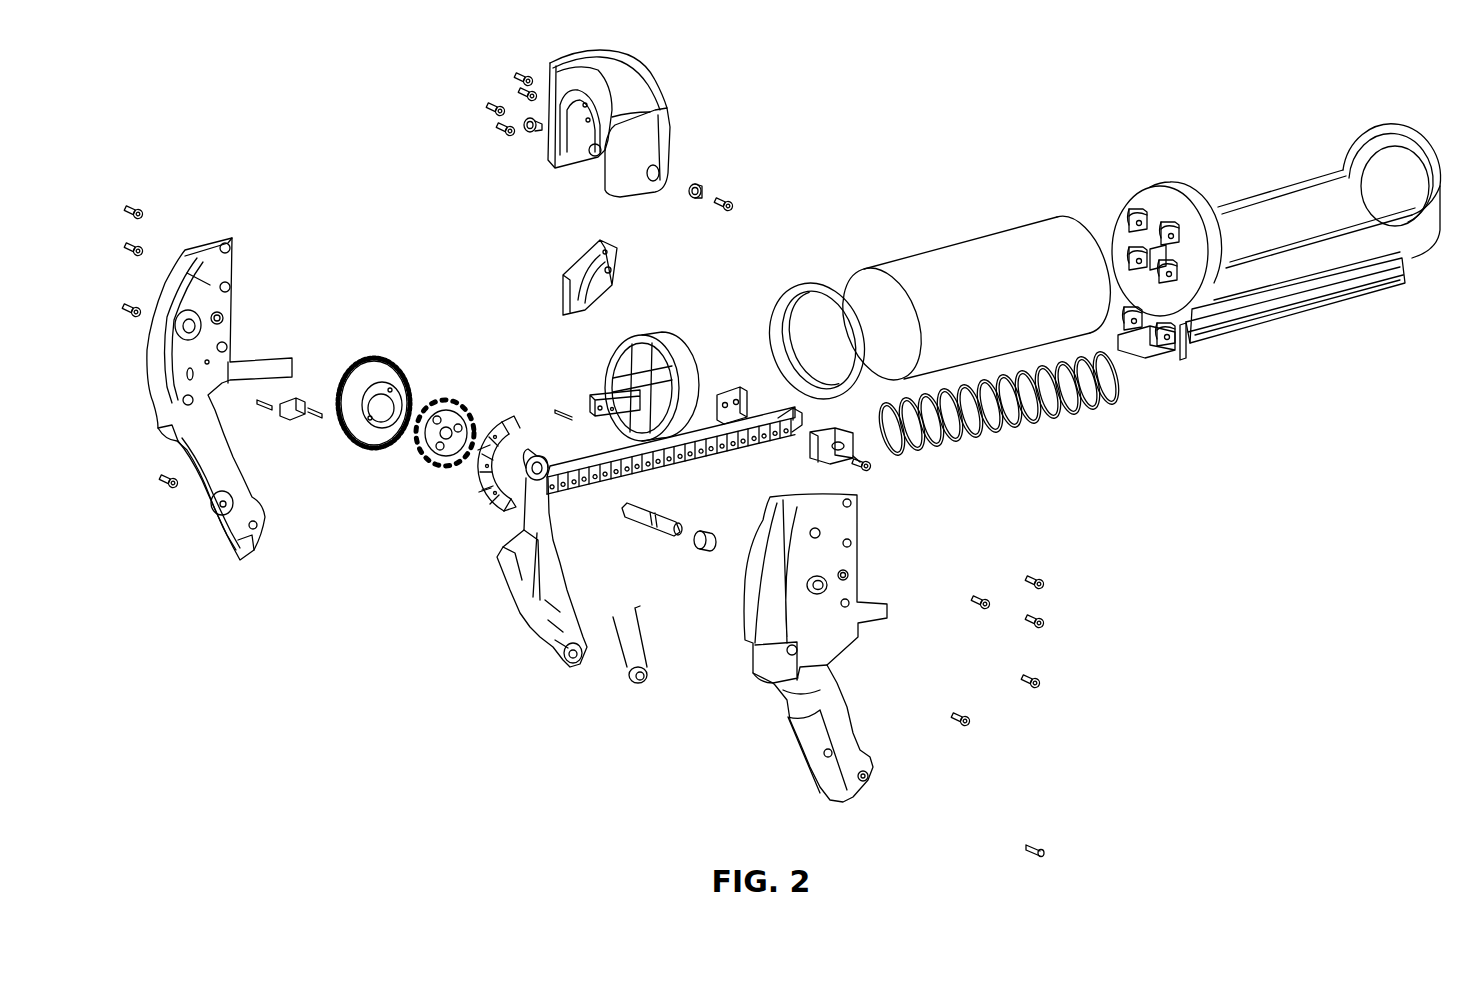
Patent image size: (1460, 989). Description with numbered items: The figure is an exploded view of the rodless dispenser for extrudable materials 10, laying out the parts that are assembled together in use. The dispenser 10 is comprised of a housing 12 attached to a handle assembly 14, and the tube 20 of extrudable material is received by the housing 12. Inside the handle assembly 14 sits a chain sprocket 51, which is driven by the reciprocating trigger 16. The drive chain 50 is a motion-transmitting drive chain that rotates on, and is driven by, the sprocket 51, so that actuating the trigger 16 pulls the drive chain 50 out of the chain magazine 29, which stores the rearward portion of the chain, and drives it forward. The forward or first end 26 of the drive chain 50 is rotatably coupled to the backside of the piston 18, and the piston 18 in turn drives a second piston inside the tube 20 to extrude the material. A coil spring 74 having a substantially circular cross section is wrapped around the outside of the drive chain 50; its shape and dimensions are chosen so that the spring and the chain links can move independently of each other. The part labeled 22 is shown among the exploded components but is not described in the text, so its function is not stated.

The rodless dispenser for extrudable materials 10 is at (1327, 63).
The housing 12 is at (1417, 240).
The handle assembly 14 is at (153, 187).
The reciprocating trigger 16 is at (562, 580).
The piston 18 is at (647, 327).
The tube of extrudable material 20 is at (962, 243).
The end cap 22 is at (802, 288).
The first end 26 is at (495, 420).
The chain magazine 29 is at (1323, 310).
The drive chain 50 is at (728, 447).
The sprocket 51 is at (422, 462).
The coil spring 74 is at (1073, 417).